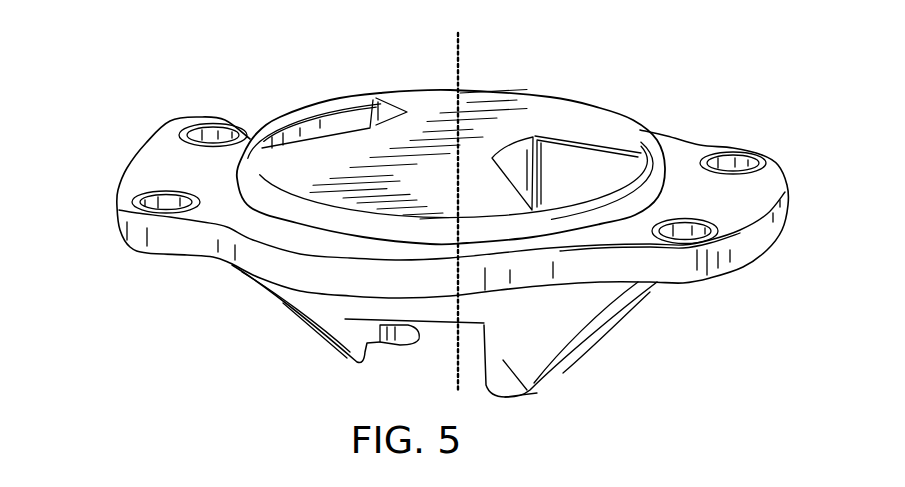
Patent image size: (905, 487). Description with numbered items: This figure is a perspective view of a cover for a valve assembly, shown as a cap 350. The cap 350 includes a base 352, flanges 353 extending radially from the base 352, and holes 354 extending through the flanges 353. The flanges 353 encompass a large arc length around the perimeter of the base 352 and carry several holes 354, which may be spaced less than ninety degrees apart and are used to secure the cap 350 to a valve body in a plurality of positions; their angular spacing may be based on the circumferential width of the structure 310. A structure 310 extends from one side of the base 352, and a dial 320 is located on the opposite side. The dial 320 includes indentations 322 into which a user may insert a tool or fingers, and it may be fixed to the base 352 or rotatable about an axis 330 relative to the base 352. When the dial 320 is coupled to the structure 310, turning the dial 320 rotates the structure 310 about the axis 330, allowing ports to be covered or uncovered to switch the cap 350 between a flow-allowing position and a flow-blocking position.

The cap 350 is at (72, 111).
The axis 330 is at (458, 70).
The base 352 is at (258, 258).
The flanges 353 is at (155, 162).
The holes 354 is at (217, 142).
The dial 320 is at (407, 103).
The indentations 322 is at (325, 118).
The structure 310 is at (358, 353).